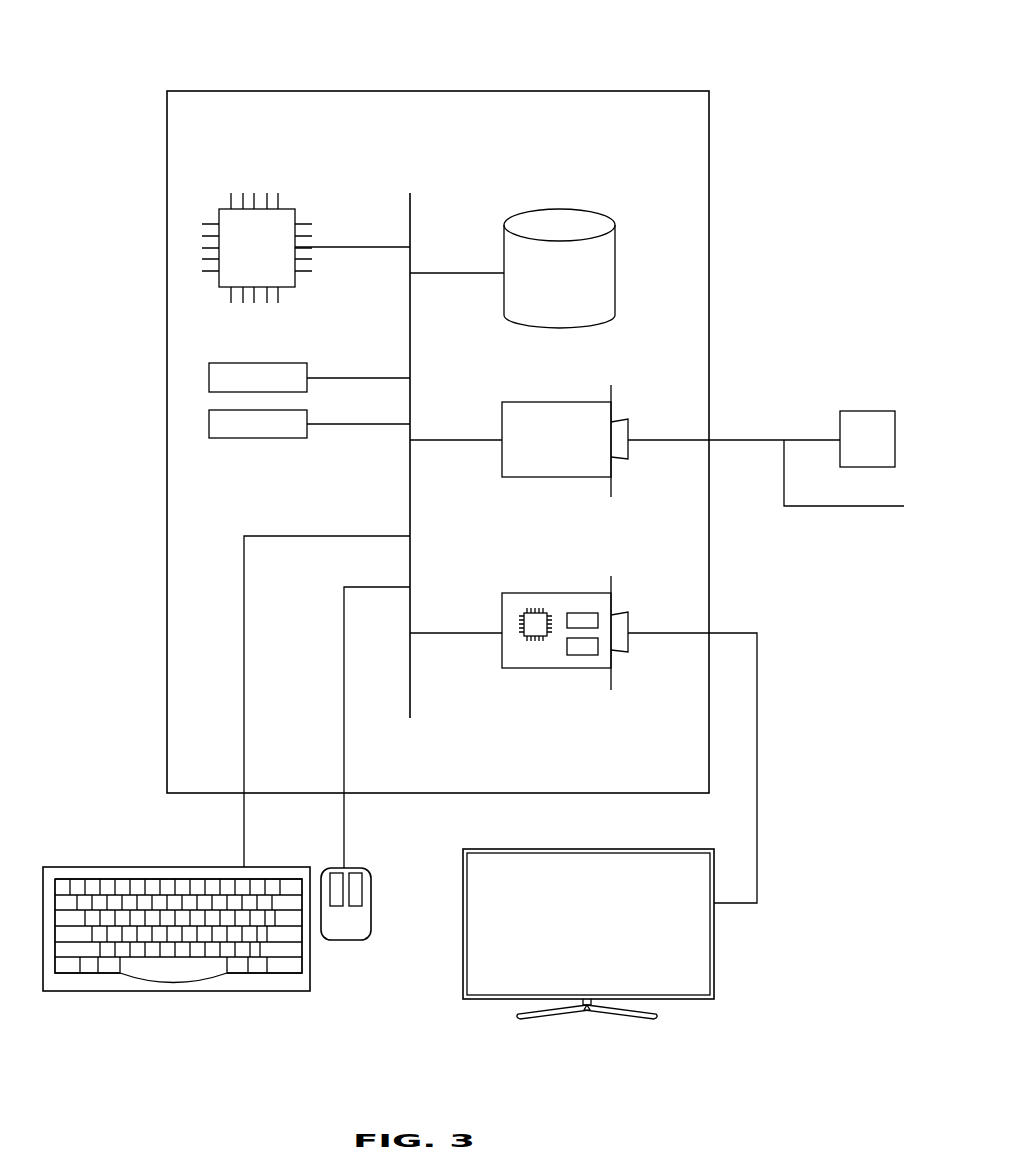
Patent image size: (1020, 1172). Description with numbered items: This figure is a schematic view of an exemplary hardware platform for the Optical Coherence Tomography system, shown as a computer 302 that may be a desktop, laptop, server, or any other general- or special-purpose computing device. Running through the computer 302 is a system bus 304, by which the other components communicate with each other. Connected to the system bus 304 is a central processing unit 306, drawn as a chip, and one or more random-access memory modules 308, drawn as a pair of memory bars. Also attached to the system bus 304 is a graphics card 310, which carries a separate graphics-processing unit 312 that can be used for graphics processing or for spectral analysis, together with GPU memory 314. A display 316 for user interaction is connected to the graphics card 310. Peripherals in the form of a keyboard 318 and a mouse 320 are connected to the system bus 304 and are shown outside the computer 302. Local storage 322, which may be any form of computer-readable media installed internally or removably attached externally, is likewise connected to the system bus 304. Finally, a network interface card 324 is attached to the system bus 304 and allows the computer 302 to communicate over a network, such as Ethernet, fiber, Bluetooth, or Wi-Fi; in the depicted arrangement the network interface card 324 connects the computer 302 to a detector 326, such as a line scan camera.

The computer 302 is at (658, 91).
The system bus 304 is at (410, 212).
The central processing unit 306 is at (295, 209).
The random-access memory modules 308 is at (307, 417).
The graphics card 310 is at (583, 731).
The graphics-processing unit 312 is at (535, 640).
The GPU memory 314 is at (580, 655).
The display 316 is at (714, 965).
The keyboard 318 is at (193, 991).
The mouse 320 is at (340, 940).
The local storage 322 is at (617, 250).
The network interface card 324 is at (502, 418).
The detector 326 is at (844, 437).